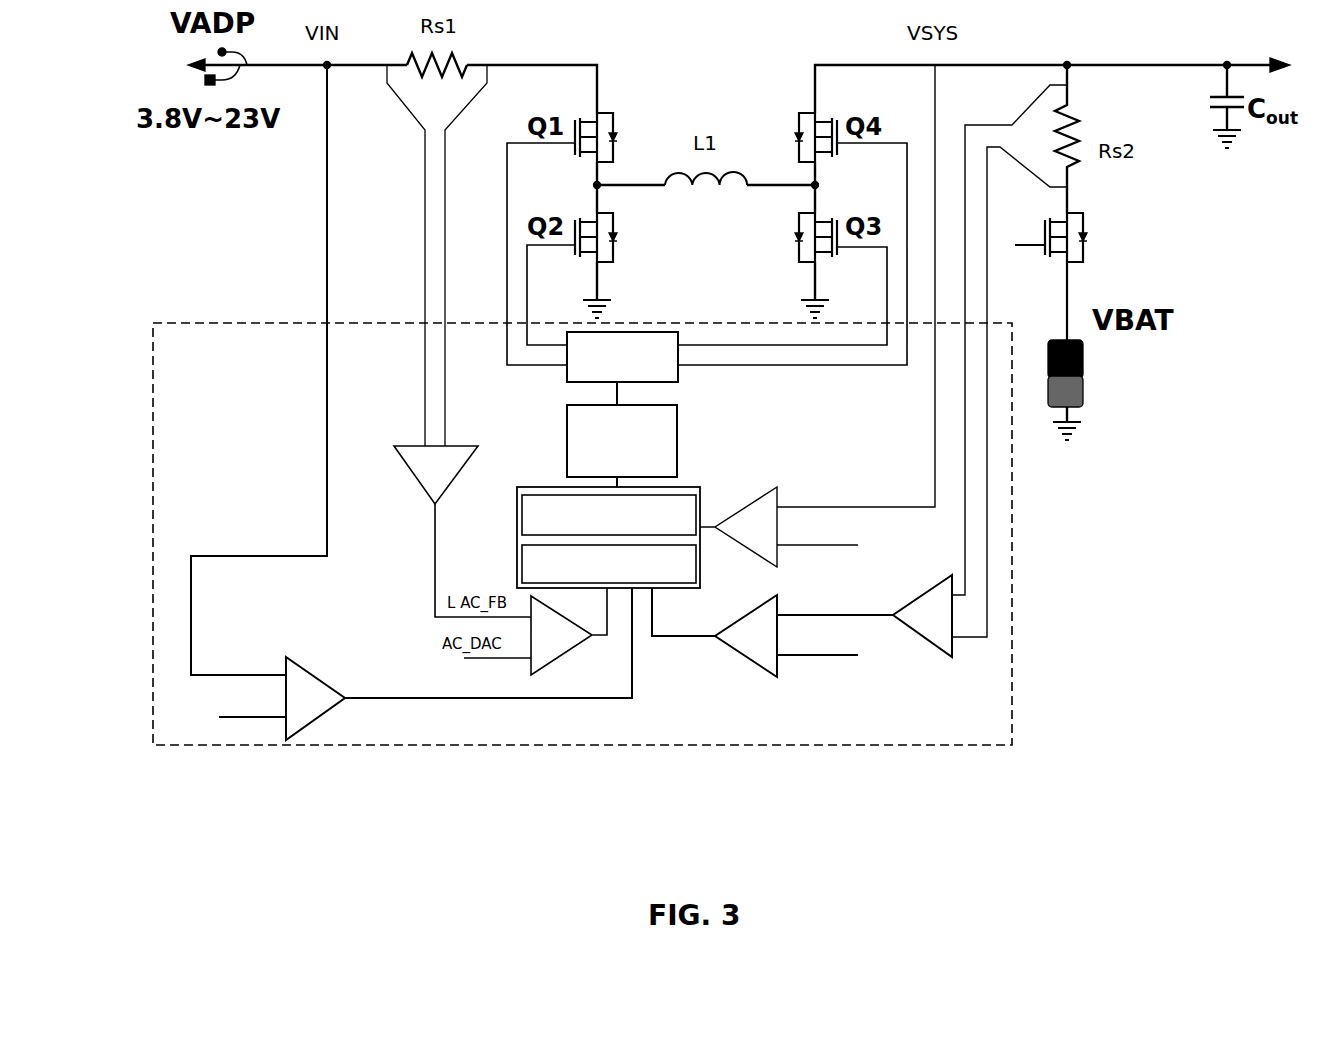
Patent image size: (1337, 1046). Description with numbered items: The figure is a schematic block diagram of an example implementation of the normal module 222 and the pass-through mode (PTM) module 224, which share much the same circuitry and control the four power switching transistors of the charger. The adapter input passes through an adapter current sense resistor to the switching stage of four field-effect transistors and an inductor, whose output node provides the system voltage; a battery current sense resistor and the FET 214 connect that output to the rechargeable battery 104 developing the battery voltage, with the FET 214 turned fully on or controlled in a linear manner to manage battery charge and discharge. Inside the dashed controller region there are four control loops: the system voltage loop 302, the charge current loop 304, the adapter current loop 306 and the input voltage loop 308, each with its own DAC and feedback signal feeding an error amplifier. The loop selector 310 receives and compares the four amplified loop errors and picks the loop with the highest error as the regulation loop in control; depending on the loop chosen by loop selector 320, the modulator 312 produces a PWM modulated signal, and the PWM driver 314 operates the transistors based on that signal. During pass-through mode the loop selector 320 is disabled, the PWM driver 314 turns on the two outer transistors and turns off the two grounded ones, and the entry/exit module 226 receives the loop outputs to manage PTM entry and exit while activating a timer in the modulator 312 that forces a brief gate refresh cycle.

The rechargeable battery 104 is at (1097, 390).
The FET 214 is at (1080, 276).
The normal module 222 is at (582, 534).
The pass-through mode (PTM) module 224 is at (582, 534).
The entry/exit module 226 is at (609, 564).
The system voltage loop 302 is at (866, 466).
The charge current loop 304 is at (858, 670).
The adapter current loop 306 is at (440, 578).
The input voltage loop 308 is at (247, 525).
The loop selector 310 is at (638, 518).
The modulator 312 is at (680, 442).
The PWM driver 314 is at (561, 371).
The loop selector 320 is at (609, 515).